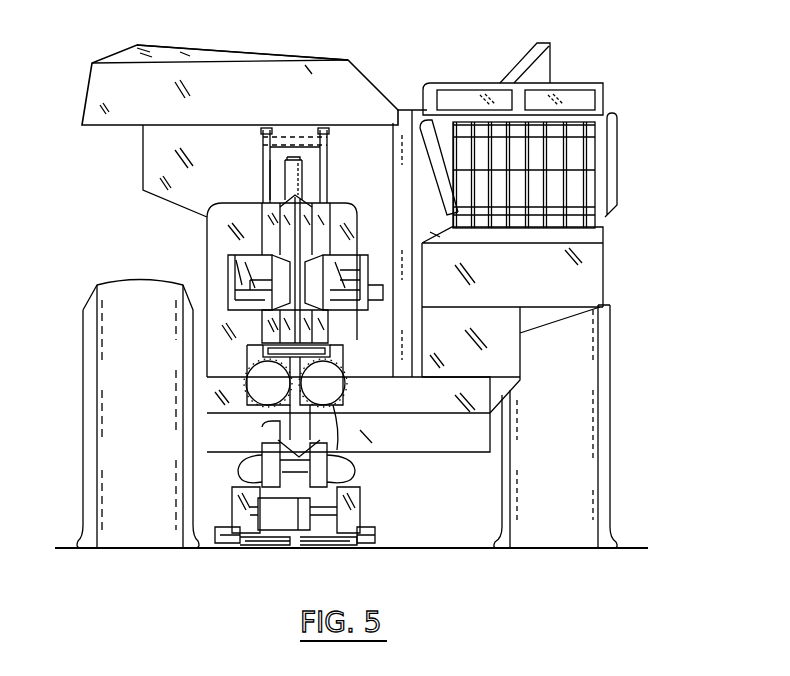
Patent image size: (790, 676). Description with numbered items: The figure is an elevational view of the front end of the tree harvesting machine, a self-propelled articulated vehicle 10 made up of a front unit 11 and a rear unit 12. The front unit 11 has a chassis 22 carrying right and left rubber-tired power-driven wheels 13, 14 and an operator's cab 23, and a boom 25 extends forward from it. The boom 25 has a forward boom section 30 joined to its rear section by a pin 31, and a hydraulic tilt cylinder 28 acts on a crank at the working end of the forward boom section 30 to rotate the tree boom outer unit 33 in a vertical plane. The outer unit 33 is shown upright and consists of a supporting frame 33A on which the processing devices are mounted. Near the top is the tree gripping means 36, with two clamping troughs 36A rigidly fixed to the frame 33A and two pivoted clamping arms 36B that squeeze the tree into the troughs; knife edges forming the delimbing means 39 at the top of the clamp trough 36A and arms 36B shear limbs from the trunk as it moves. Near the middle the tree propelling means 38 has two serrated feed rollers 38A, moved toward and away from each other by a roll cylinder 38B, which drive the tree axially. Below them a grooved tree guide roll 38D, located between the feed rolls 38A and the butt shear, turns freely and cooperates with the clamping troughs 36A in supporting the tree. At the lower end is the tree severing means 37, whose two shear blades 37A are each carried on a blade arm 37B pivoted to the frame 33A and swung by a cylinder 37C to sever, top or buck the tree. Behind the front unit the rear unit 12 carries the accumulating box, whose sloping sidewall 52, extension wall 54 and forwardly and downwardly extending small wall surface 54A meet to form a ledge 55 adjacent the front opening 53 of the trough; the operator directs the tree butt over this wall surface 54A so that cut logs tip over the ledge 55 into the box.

The self-propelled articulated vehicle 10 is at (652, 72).
The front unit 11 is at (437, 463).
The rear unit 12 is at (207, 47).
The right power-driven wheel 13 is at (590, 438).
The left power-driven wheel 14 is at (90, 432).
The chassis 22 is at (475, 448).
The operator's cab 23 is at (598, 262).
The boom 25 is at (263, 170).
The tilt cylinder 28 is at (290, 188).
The forward boom section 30 is at (327, 163).
The pin 31 is at (263, 137).
The tree boom outer unit 33 is at (232, 240).
The supporting frame 33A is at (300, 433).
The tree gripping means 36 is at (218, 303).
The clamping trough 36A is at (262, 227).
The clamping arm 36B is at (243, 283).
The tree severing means 37 is at (367, 515).
The shear blade 37A is at (270, 542).
The blade arm 37B is at (242, 545).
The cylinder 37C is at (268, 520).
The tree propelling means 38 is at (292, 405).
The feed roller 38A is at (305, 392).
The roll cylinder 38B is at (315, 353).
The grooved tree guide roll 38D is at (307, 470).
The delimbing means 39 is at (312, 197).
The sidewall 52 is at (543, 65).
The opening 53 is at (405, 110).
The extension wall 54 is at (143, 148).
The small wall surface 54A is at (156, 52).
The ledge 55 is at (258, 52).